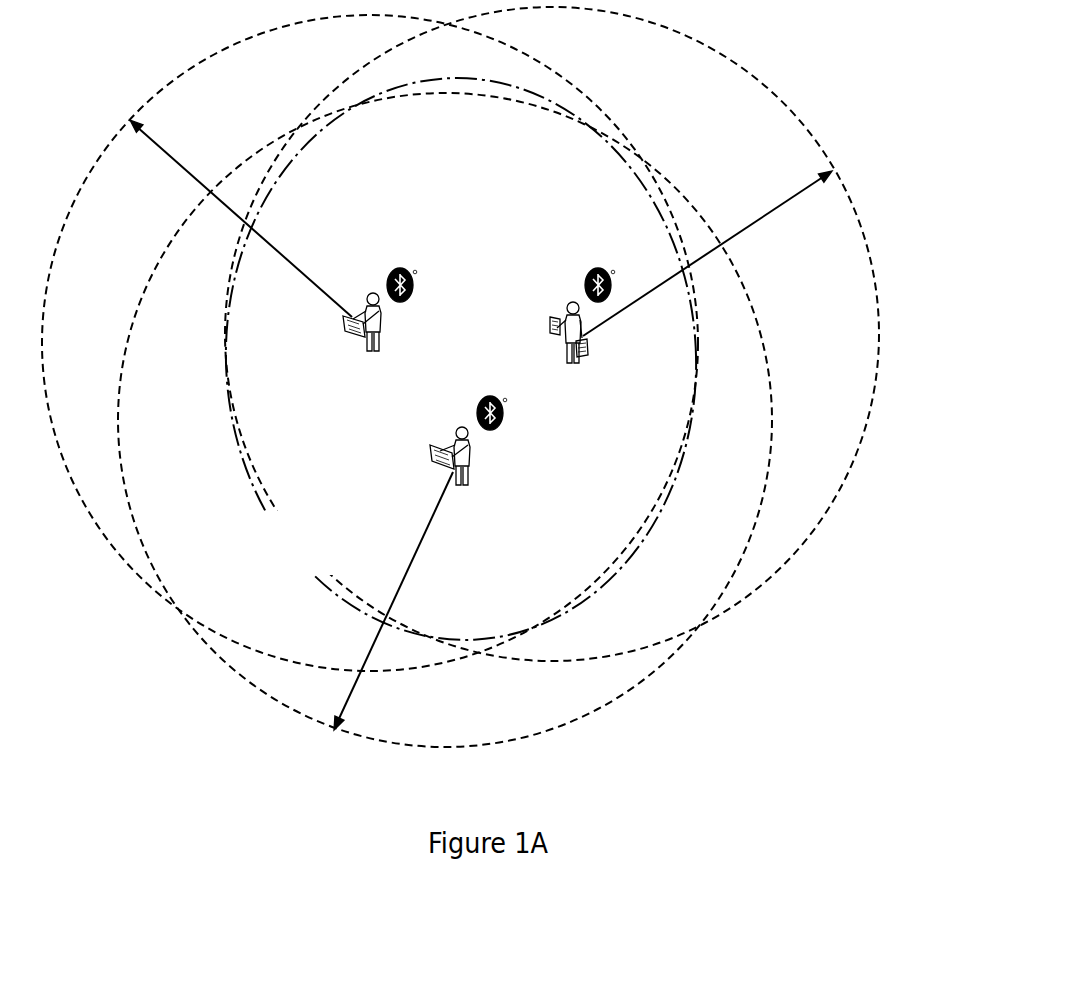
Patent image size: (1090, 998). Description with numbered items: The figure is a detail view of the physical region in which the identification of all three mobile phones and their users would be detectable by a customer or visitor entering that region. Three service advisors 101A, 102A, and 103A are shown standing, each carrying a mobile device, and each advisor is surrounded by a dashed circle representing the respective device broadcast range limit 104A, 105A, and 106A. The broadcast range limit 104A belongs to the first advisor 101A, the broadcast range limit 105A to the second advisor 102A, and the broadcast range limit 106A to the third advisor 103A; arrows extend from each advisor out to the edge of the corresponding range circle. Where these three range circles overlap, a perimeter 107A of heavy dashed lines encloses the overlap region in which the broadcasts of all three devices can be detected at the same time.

The service advisor 101A is at (372, 278).
The service advisor 102A is at (575, 278).
The service advisor 103A is at (481, 472).
The device broadcast range limit 104A is at (176, 74).
The device broadcast range limit 105A is at (752, 71).
The device broadcast range limit 106A is at (353, 729).
The perimeter 107A is at (267, 475).